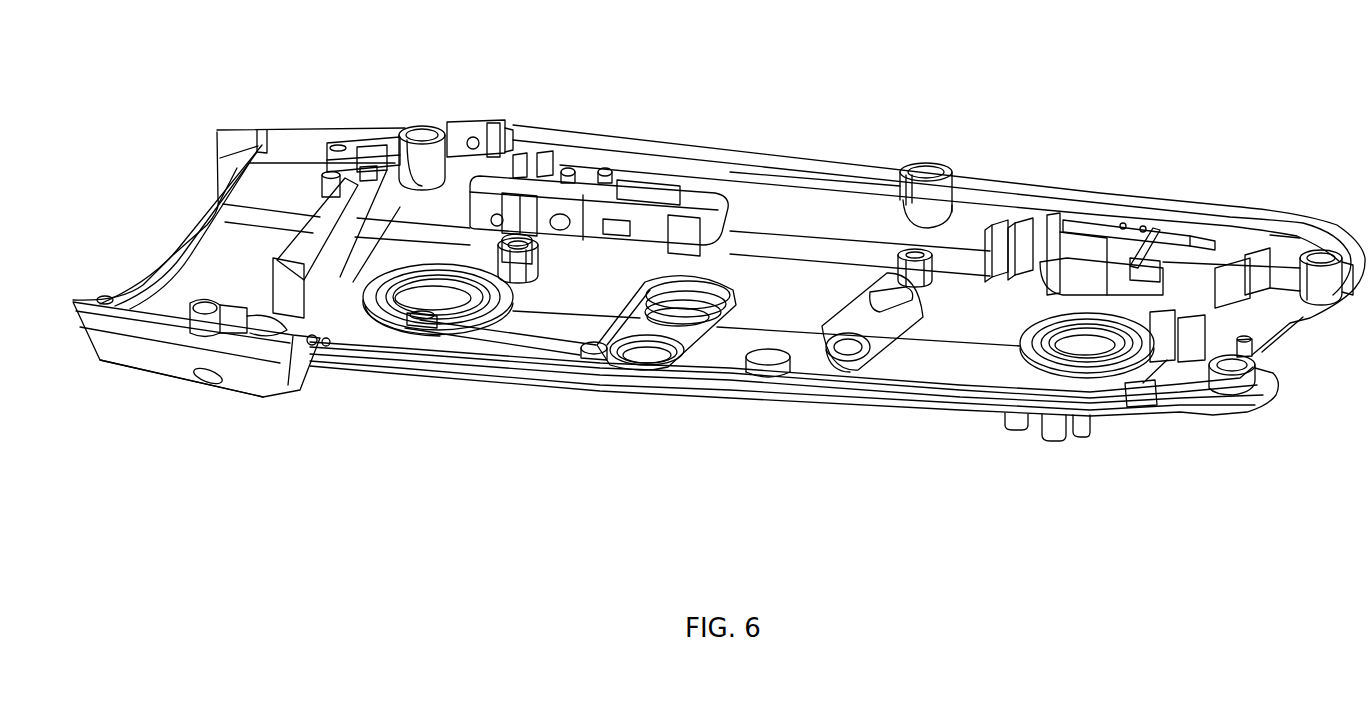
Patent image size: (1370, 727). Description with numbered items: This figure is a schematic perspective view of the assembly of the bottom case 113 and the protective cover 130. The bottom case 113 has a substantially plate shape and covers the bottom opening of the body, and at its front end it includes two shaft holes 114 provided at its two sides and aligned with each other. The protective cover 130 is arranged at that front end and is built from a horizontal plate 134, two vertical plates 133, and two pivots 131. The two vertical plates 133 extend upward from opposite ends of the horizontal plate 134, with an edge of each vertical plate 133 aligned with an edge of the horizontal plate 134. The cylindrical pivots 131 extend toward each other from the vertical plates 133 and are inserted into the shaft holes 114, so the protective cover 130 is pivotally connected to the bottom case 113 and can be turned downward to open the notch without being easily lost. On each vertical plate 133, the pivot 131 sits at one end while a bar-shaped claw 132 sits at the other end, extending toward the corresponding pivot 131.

The bottom case 113 is at (760, 395).
The shaft hole 114 is at (452, 133).
The protective cover 130 is at (196, 384).
The pivot 131 is at (490, 133).
The claw 132 is at (258, 130).
The vertical plate 133 is at (165, 358).
The horizontal plate 134 is at (210, 270).